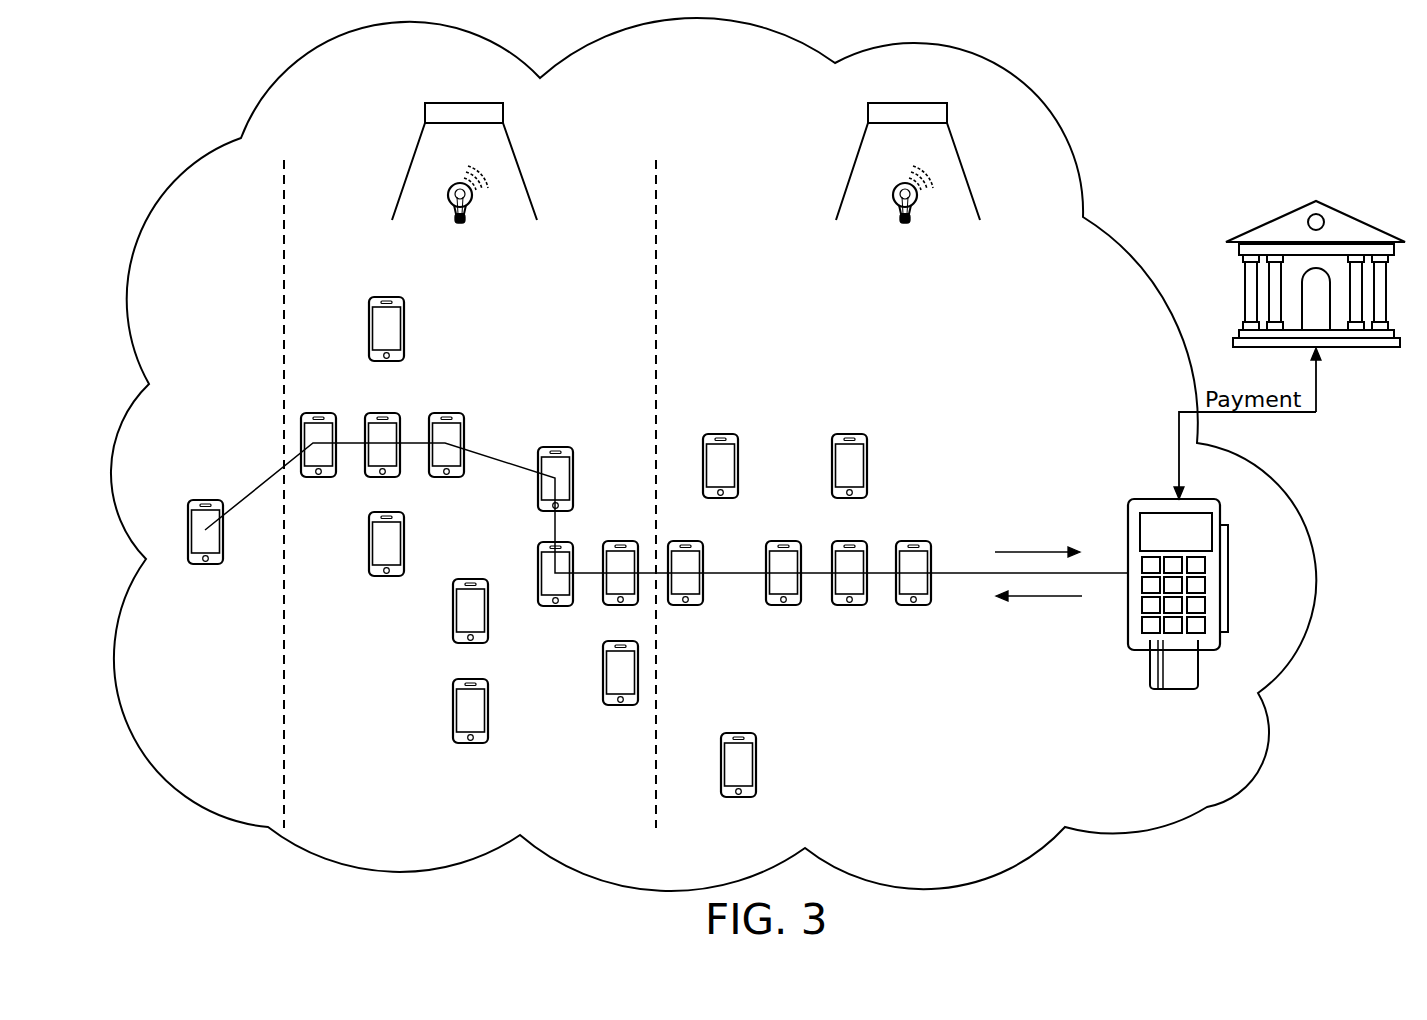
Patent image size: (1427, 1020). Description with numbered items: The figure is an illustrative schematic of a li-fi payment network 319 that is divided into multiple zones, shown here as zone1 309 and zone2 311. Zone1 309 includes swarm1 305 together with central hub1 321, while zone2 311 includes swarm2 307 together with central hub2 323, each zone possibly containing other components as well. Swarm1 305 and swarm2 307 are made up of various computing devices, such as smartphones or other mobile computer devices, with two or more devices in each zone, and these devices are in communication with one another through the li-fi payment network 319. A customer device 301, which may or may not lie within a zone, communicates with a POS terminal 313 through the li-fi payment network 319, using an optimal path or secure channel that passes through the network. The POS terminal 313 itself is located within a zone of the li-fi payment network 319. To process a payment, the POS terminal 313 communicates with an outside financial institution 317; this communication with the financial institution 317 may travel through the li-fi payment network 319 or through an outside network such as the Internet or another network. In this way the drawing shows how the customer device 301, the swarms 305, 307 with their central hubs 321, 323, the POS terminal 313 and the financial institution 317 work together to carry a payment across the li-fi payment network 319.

The customer device 301 is at (205, 497).
The swarm1 305 is at (358, 637).
The swarm2 307 is at (730, 652).
The zone1 309 is at (440, 167).
The zone2 311 is at (884, 167).
The POS terminal 313 is at (1128, 522).
The financial institution 317 is at (1343, 213).
The li-fi payment network 319 is at (267, 88).
The central hub1 321 is at (503, 112).
The central hub2 323 is at (947, 112).